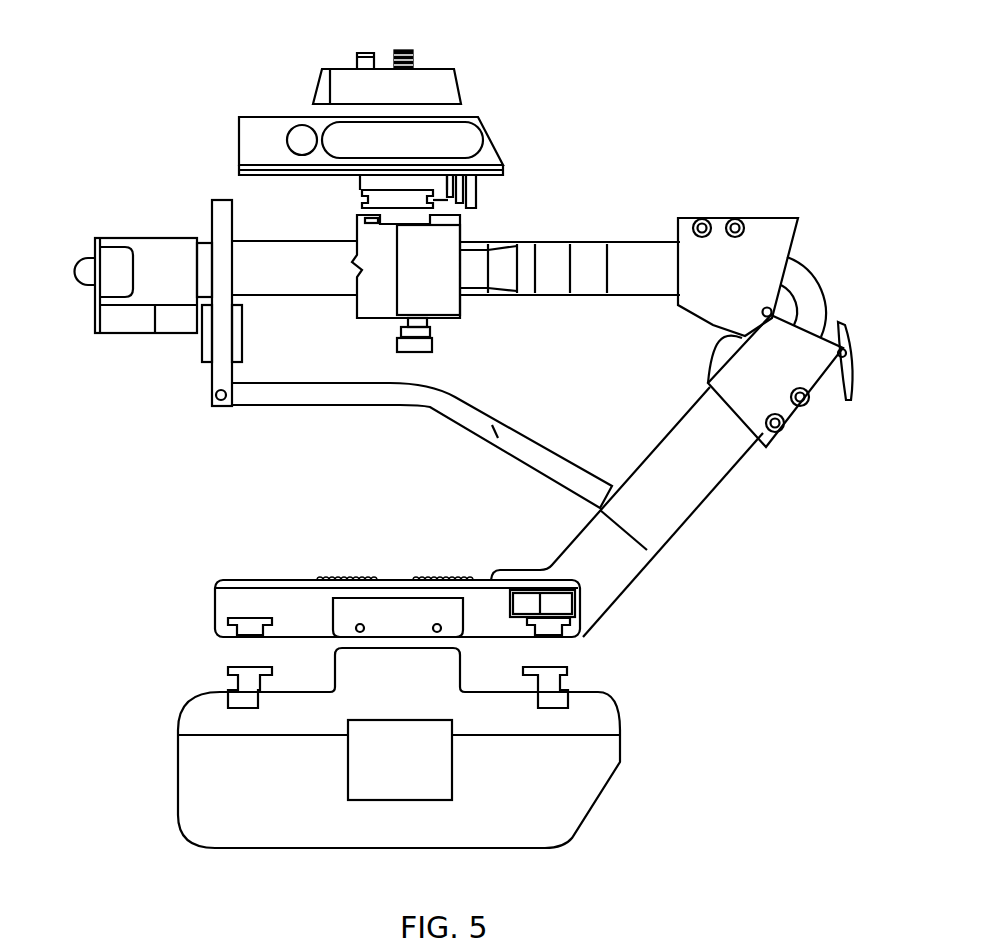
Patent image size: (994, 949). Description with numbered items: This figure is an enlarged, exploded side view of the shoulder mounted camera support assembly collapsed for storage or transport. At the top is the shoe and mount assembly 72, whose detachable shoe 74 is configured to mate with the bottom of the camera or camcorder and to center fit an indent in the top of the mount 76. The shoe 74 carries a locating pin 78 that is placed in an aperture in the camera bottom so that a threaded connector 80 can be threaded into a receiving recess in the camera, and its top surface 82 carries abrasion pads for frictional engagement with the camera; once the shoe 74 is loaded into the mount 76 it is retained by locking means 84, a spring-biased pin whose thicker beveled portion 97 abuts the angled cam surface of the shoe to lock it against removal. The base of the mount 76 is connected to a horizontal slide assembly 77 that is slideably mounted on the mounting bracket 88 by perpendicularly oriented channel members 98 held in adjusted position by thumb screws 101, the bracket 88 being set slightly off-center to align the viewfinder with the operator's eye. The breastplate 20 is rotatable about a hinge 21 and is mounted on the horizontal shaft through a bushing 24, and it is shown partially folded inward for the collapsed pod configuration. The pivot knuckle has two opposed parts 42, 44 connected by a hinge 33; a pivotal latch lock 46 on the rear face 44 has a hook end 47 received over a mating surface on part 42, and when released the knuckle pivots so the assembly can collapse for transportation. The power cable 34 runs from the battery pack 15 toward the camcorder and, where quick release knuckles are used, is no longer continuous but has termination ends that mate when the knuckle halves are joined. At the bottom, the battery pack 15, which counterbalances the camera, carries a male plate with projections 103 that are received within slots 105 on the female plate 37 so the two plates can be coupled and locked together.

The battery pack 15 is at (183, 767).
The breastplate 20 is at (283, 407).
The hinge 21 is at (215, 395).
The bushing 24 is at (215, 200).
The hinge 33 is at (762, 312).
The power cable 34 is at (822, 280).
The female plate 37 is at (233, 598).
The part 42 is at (155, 238).
The part 44 is at (120, 333).
The pivotal latch lock 46 is at (85, 265).
The hook end 47 is at (843, 323).
The shoe and mount assembly 72 is at (240, 104).
The shoe 74 is at (452, 66).
The mount 76 is at (482, 111).
The horizontal slide assembly 77 is at (505, 170).
The locating pin 78 is at (364, 52).
The threaded connector 80 is at (415, 55).
The top surface 82 is at (320, 82).
The locking means 84 is at (301, 128).
The mounting bracket 88 is at (379, 265).
The thicker beveled portion 97 is at (395, 228).
The channel member 98 is at (362, 198).
The thumb screw 101 is at (432, 343).
The projections 103 is at (570, 670).
The slots 105 is at (565, 636).